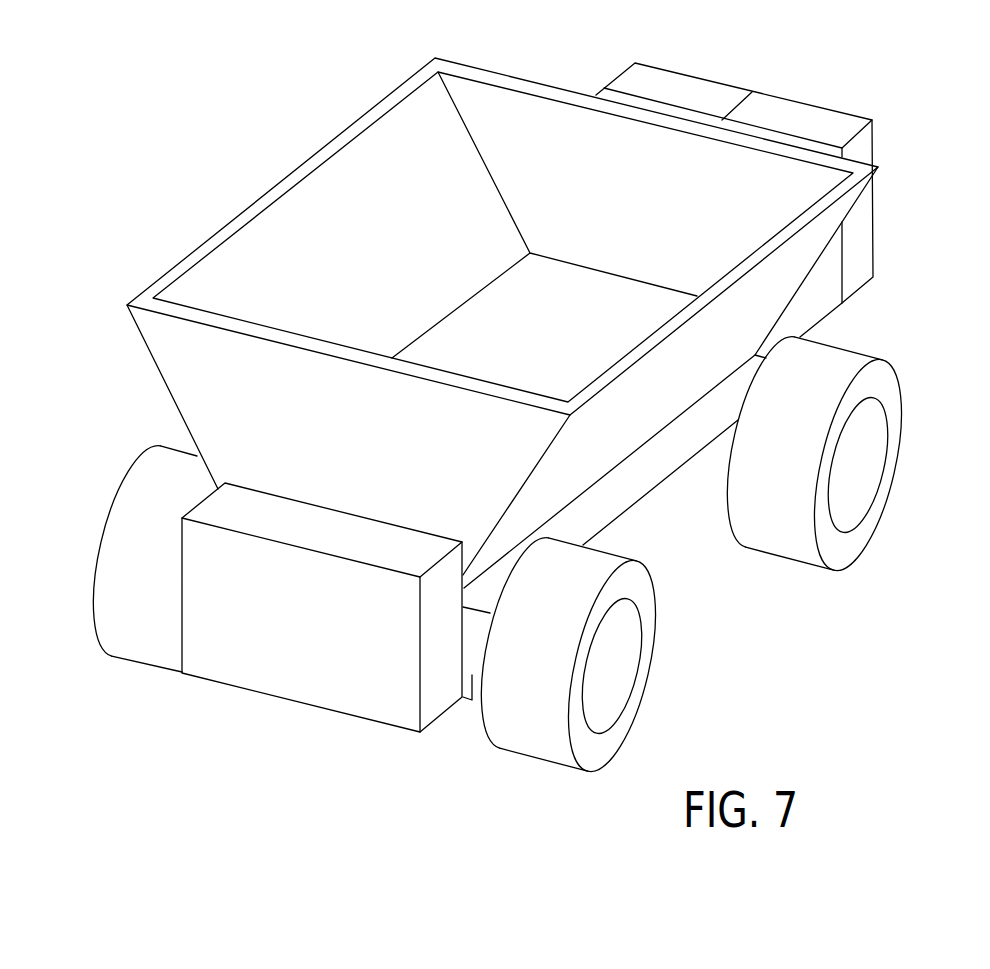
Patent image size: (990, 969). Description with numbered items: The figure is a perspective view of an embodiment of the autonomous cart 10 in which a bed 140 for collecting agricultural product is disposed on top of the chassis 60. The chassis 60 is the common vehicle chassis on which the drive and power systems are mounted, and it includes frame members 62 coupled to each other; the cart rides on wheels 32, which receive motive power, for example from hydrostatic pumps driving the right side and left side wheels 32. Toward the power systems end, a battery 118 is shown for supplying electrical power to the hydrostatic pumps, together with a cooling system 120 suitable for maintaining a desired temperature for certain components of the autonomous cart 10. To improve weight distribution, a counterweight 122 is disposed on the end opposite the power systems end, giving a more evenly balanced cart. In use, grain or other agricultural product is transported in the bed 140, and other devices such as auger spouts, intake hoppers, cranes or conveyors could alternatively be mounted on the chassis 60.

The autonomous cart 10 is at (874, 73).
The wheels 32 is at (120, 523).
The chassis 60 is at (690, 588).
The frame members 62 is at (472, 677).
The battery 118 is at (813, 302).
The cooling system 120 is at (875, 225).
The counterweight 122 is at (300, 703).
The bed 140 is at (280, 182).